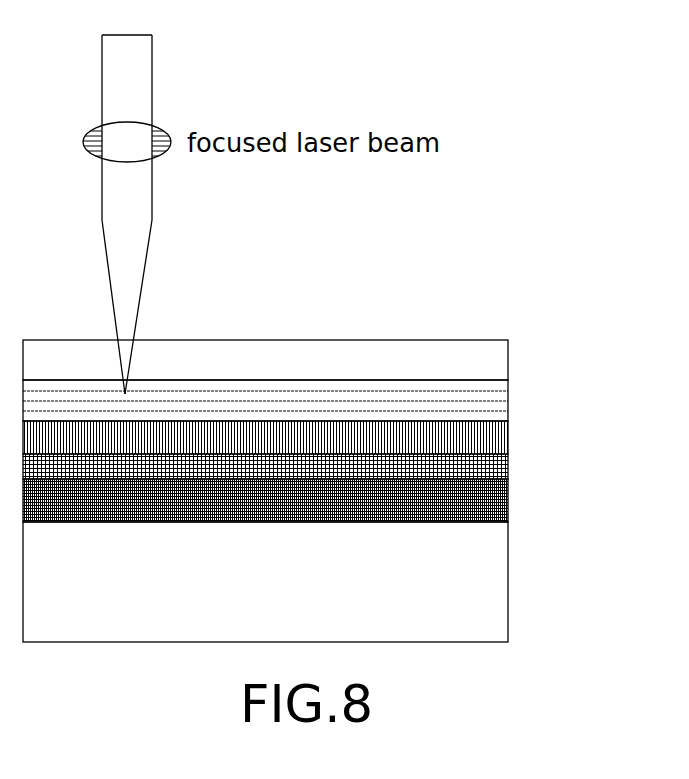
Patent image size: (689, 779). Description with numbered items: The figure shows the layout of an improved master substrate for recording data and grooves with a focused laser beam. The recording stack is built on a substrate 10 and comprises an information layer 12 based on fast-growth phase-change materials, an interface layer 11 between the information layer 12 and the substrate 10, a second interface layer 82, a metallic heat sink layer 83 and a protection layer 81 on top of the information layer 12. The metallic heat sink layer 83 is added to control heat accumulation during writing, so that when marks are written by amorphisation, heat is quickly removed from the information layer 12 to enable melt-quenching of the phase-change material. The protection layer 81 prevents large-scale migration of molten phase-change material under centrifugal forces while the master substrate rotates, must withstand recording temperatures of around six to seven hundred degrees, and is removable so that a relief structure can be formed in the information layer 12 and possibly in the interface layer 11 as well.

The substrate 10 is at (488, 577).
The interface layer 11 is at (488, 438).
The information layer 12 is at (488, 401).
The protection layer 81 is at (488, 357).
The second interface layer 82 is at (488, 468).
The metallic heat sink layer 83 is at (488, 510).